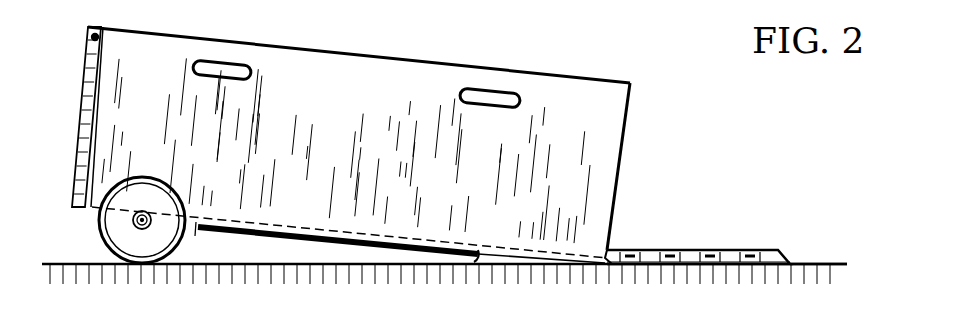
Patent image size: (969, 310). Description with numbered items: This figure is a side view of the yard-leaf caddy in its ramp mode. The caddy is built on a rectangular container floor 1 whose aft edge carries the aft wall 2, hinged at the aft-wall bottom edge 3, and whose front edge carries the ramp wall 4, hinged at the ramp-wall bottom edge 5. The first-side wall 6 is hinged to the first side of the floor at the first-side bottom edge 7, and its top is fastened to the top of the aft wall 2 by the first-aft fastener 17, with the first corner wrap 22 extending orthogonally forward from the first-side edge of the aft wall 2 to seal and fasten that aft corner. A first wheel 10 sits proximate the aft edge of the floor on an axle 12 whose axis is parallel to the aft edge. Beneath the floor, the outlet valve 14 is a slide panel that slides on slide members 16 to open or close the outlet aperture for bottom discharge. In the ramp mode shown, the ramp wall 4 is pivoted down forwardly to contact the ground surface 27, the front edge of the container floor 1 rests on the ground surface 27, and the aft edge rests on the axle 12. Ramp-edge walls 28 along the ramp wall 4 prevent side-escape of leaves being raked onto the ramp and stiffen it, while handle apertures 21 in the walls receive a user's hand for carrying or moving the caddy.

The container floor 1 is at (95, 207).
The aft wall 2 is at (86, 78).
The aft-wall bottom edge 3 is at (80, 205).
The ramp wall 4 is at (686, 260).
The ramp-wall bottom edge 5 is at (612, 263).
The first-side wall 6 is at (382, 103).
The first-side bottom edge 7 is at (527, 254).
The first wheel 10 is at (118, 252).
The axle 12 is at (148, 228).
The outlet valve 14 is at (348, 244).
The slide members 16 is at (197, 227).
The first-aft fastener 17 is at (92, 37).
The handle aperture 21 is at (490, 101).
The first corner wrap 22 is at (80, 118).
The ground surface 27 is at (815, 264).
The ramp-edge walls 28 is at (747, 264).